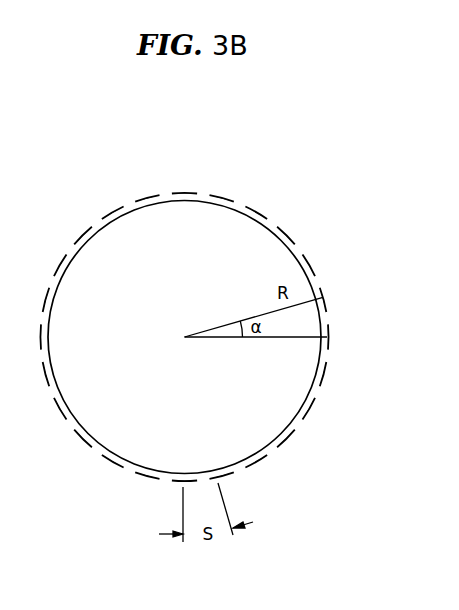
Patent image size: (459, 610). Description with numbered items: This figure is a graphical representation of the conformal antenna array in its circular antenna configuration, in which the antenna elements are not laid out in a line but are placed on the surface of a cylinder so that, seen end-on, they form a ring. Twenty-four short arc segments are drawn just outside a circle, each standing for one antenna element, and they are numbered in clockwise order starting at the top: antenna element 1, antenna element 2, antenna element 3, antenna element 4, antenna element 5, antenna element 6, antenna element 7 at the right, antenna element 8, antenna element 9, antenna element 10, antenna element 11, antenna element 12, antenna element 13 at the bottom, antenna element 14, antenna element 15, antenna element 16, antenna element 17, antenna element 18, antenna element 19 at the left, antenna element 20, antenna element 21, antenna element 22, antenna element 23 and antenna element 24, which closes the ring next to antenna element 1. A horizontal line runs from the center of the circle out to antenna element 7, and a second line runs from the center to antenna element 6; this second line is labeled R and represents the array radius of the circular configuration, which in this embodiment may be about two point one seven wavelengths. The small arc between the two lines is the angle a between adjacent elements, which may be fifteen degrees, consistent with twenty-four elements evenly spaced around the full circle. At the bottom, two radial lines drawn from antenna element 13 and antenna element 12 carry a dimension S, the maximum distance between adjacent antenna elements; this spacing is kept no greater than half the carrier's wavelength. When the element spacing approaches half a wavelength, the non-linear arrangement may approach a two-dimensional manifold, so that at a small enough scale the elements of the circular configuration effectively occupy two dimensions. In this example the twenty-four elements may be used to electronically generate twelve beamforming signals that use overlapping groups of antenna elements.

The antenna element 1 is at (184, 181).
The antenna element 2 is at (222, 188).
The antenna element 3 is at (258, 203).
The antenna element 4 is at (289, 227).
The antenna element 5 is at (315, 260).
The antenna element 6 is at (332, 297).
The antenna element 7 is at (338, 336).
The antenna element 8 is at (332, 377).
The antenna element 9 is at (316, 411).
The antenna element 10 is at (295, 446).
The antenna element 11 is at (261, 470).
The antenna element 12 is at (218, 463).
The antenna element 13 is at (184, 466).
The antenna element 14 is at (145, 489).
The antenna element 15 is at (106, 472).
The antenna element 16 is at (76, 448).
The antenna element 17 is at (50, 419).
The antenna element 18 is at (32, 379).
The antenna element 19 is at (25, 336).
The antenna element 20 is at (33, 298).
The antenna element 21 is at (49, 261).
The antenna element 22 is at (74, 228).
The antenna element 23 is at (106, 202).
The antenna element 24 is at (145, 186).